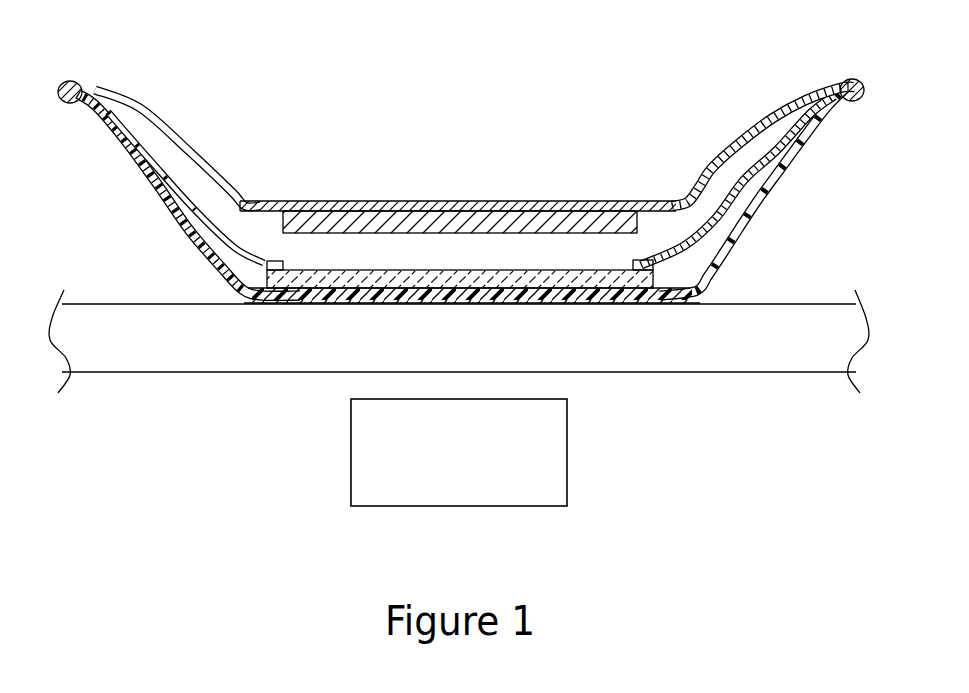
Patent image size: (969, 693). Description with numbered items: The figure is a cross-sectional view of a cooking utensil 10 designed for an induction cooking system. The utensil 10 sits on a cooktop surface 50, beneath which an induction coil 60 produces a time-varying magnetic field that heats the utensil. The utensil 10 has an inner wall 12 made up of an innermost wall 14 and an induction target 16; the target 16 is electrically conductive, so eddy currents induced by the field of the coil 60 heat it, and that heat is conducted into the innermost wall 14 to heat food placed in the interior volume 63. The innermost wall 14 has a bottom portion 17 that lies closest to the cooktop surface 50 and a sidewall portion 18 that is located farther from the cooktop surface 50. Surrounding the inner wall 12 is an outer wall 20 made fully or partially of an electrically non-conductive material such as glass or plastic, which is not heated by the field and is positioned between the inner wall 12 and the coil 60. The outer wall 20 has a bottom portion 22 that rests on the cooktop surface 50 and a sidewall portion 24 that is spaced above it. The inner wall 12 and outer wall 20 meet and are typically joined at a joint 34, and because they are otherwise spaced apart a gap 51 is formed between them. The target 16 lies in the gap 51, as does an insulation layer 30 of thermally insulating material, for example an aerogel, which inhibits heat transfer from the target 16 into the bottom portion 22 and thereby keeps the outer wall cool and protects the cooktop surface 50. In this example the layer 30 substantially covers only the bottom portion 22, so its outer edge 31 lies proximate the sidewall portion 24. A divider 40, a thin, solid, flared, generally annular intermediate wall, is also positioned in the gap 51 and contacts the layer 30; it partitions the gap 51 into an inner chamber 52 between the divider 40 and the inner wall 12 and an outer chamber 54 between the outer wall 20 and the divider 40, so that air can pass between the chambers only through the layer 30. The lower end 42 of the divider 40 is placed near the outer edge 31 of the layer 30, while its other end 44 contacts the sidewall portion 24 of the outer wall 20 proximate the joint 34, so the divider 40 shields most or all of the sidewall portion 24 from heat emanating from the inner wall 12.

The cooking utensil 10 is at (421, 138).
The inner wall 12 is at (208, 150).
The innermost wall 14 is at (652, 197).
The induction target 16 is at (453, 213).
The bottom portion 17 is at (511, 201).
The sidewall portion 18 is at (764, 117).
The outer wall 20 is at (143, 193).
The bottom portion 22 is at (294, 305).
The sidewall portion 24 is at (777, 174).
The insulation layer 30 is at (419, 270).
The outer edge 31 is at (236, 294).
The joint 34 is at (96, 84).
The divider 40 is at (185, 206).
The lower end 42 is at (284, 263).
The other end 44 is at (102, 112).
The cooktop surface 50 is at (706, 373).
The gap 51 is at (228, 222).
The inner chamber 52 is at (379, 243).
The outer chamber 54 is at (688, 267).
The induction coil 60 is at (567, 440).
The interior volume 63 is at (336, 156).